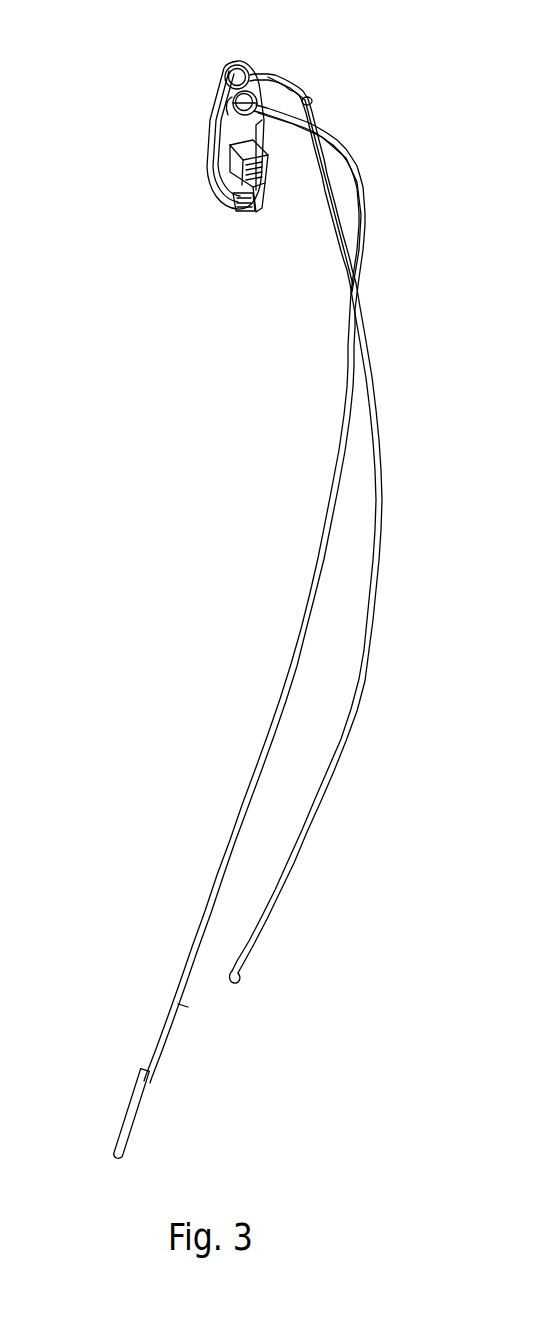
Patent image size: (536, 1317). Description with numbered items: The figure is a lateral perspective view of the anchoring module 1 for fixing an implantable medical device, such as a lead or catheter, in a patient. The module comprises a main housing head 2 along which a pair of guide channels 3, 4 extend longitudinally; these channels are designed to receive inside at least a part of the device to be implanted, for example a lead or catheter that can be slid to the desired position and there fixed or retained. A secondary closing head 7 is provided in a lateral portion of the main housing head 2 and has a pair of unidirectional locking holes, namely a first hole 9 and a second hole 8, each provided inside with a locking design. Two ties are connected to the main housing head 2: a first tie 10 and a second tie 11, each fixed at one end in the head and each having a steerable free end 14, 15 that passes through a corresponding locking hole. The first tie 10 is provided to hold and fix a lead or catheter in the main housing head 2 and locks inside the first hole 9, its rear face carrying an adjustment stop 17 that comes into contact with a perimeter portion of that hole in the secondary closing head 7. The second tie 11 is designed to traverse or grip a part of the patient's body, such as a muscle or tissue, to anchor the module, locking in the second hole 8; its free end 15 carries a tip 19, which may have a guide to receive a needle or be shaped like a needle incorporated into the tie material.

The anchoring module 1 is at (253, 445).
The main housing head 2 is at (210, 148).
The guide channel 3 is at (238, 73).
The guide channel 4 is at (230, 97).
The secondary closing head 7 is at (254, 188).
The second unidirectional locking hole 8 is at (245, 214).
The first unidirectional locking hole 9 is at (264, 176).
The first tie 10 is at (380, 725).
The second tie 11 is at (193, 862).
The free end 14 is at (272, 972).
The free end 15 is at (183, 1020).
The adjustment stop 17 is at (314, 98).
The tip 19 is at (110, 1122).